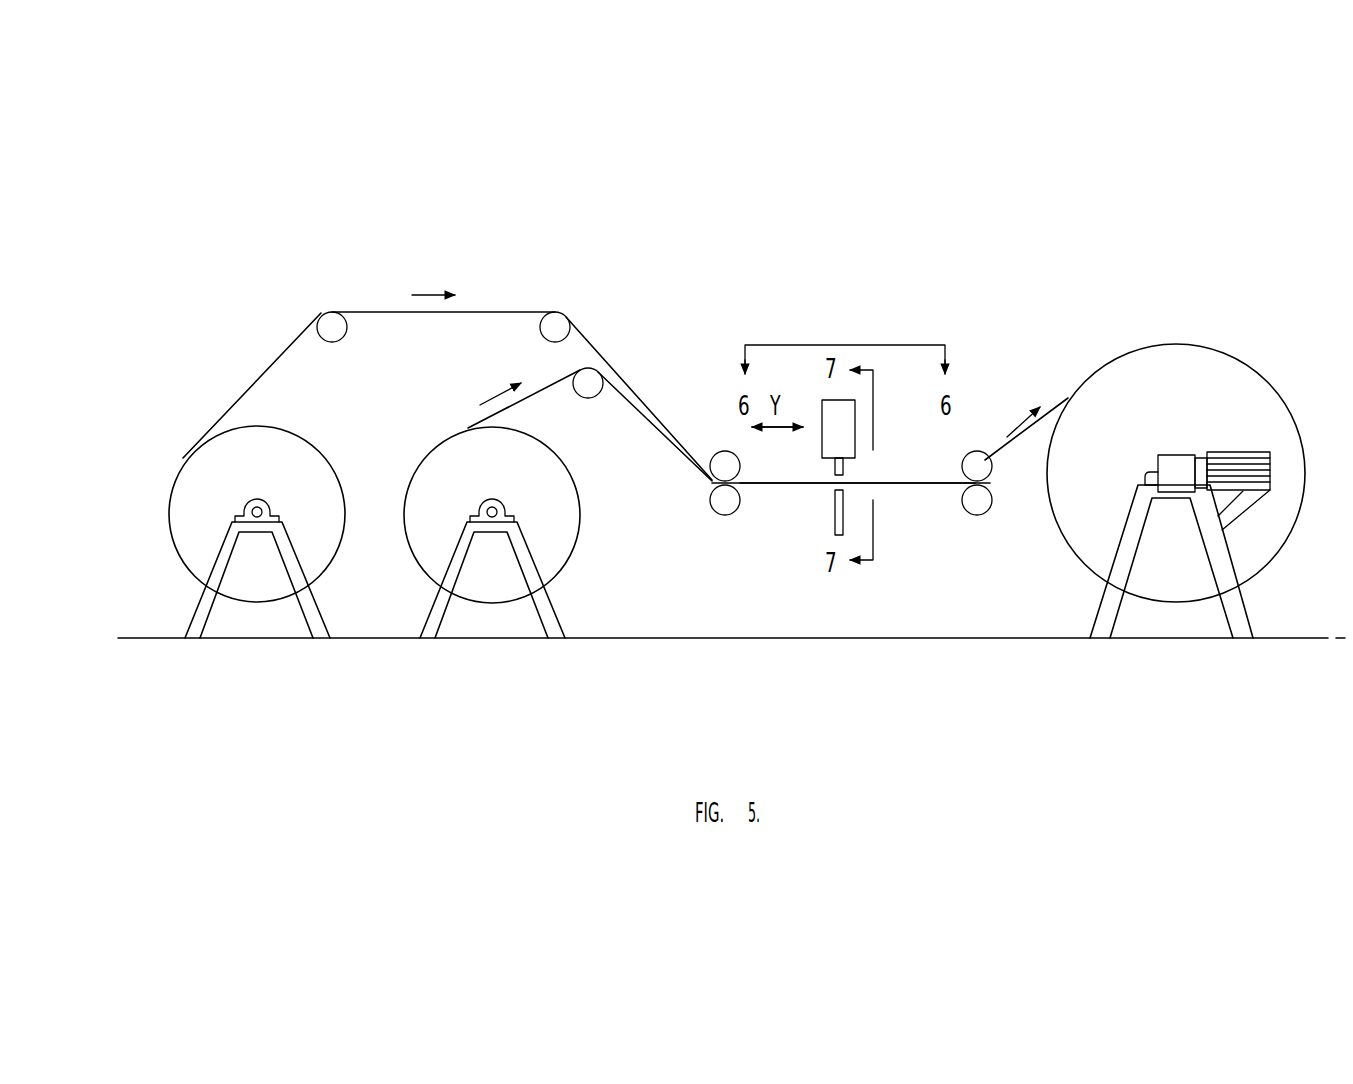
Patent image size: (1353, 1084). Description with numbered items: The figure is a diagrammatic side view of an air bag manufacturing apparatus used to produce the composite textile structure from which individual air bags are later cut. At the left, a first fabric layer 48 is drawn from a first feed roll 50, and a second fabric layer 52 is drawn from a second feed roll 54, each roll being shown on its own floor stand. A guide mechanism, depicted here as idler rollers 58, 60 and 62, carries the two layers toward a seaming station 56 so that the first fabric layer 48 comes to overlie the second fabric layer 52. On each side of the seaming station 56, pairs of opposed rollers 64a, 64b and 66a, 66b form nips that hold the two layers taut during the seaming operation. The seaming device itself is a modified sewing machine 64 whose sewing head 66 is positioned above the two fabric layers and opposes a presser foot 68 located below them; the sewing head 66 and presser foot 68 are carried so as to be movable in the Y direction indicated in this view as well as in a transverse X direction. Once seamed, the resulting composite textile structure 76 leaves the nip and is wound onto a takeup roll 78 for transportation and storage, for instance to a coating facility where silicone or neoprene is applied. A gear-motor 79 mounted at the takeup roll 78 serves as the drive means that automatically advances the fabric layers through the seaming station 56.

The first fabric layer 48 is at (262, 377).
The first feed roll 50 is at (170, 520).
The second fabric layer 52 is at (512, 404).
The second feed roll 54 is at (578, 543).
The seaming station 56 is at (931, 517).
The idler roller 58 is at (345, 336).
The idler roller 60 is at (542, 334).
The idler roller 62 is at (600, 395).
The modified sewing machine 64 is at (802, 485).
The opposed roller 64a is at (722, 452).
The opposed roller 64b is at (735, 512).
The sewing head 66 is at (822, 442).
The opposed roller 66a is at (962, 459).
The opposed roller 66b is at (988, 507).
The presser foot 68 is at (833, 491).
The composite textile structure 76 is at (997, 453).
The takeup roll 78 is at (1137, 342).
The gear-motor 79 is at (1225, 452).